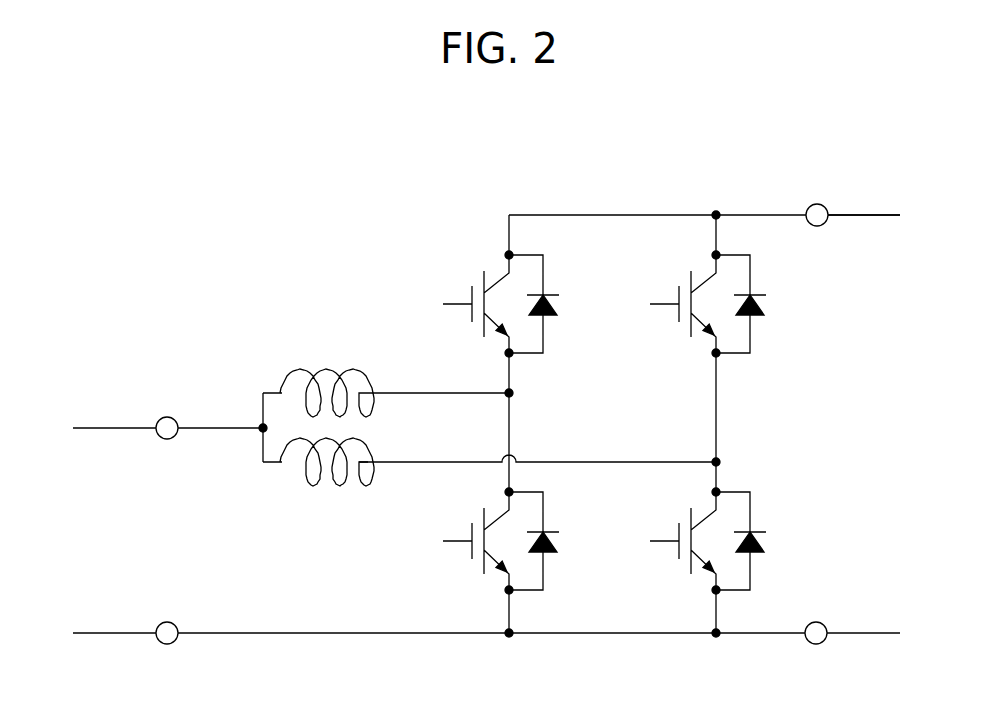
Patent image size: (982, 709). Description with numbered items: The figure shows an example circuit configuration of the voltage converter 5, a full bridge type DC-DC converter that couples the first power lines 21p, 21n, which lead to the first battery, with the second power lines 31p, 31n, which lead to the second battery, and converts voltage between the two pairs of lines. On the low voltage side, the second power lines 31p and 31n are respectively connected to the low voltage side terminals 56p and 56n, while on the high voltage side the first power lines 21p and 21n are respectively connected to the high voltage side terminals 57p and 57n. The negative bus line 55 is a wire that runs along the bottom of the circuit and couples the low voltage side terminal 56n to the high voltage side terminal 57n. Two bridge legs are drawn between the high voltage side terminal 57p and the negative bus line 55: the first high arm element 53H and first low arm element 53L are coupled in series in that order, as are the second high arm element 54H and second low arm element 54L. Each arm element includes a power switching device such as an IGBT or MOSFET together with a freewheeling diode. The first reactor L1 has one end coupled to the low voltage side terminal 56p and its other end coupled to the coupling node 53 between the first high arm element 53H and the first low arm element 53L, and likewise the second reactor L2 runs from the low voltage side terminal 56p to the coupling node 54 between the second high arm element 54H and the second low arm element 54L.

The voltage converter 5 is at (258, 178).
The first high arm element 53H is at (434, 272).
The second high arm element 54H is at (636, 280).
The first low arm element 53L is at (418, 517).
The second low arm element 54L is at (635, 519).
The coupling node 53 is at (514, 393).
The coupling node 54 is at (720, 463).
The first reactor L1 is at (338, 369).
The second reactor L2 is at (325, 484).
The negative bus line 55 is at (392, 633).
The second power line 31p is at (92, 428).
The second power line 31n is at (93, 633).
The low voltage side terminal 56p is at (170, 418).
The low voltage side terminal 56n is at (170, 623).
The high voltage side terminal 57p is at (820, 205).
The high voltage side terminal 57n is at (818, 622).
The first power line 21p is at (885, 215).
The first power line 21n is at (888, 633).